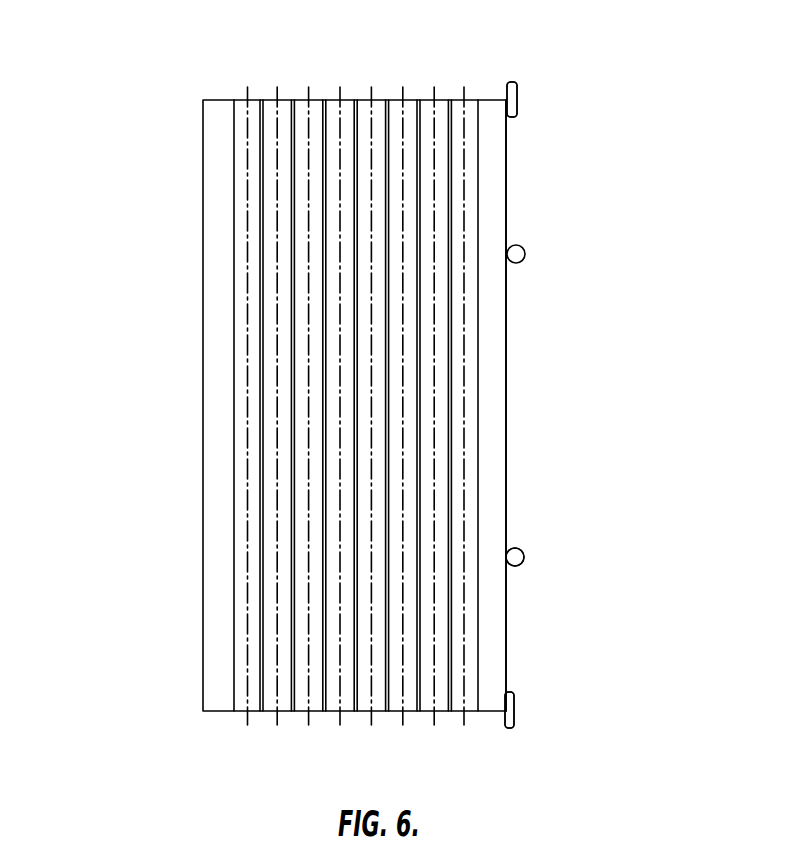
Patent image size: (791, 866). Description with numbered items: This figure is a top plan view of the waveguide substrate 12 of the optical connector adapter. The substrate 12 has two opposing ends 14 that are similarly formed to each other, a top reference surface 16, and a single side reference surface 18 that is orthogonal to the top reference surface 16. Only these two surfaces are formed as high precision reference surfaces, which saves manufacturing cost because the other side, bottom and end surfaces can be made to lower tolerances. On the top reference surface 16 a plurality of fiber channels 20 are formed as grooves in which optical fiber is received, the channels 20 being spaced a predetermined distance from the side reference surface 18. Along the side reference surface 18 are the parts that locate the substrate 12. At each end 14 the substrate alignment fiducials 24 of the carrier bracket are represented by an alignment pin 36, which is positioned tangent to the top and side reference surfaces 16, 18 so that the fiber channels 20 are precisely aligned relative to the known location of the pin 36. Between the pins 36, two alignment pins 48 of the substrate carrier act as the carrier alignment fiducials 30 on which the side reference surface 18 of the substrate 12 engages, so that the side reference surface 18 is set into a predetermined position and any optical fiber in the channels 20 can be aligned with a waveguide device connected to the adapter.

The substrate 12 is at (180, 332).
The opposing ends 14 is at (218, 108).
The top reference surface 16 is at (470, 137).
The side reference surface 18 is at (507, 370).
The fiber channels 20 is at (323, 125).
The substrate alignment fiducials 24 is at (537, 70).
The carrier alignment fiducials 30 is at (535, 535).
The alignment pin 36 is at (517, 100).
The alignment pins 48 is at (525, 253).